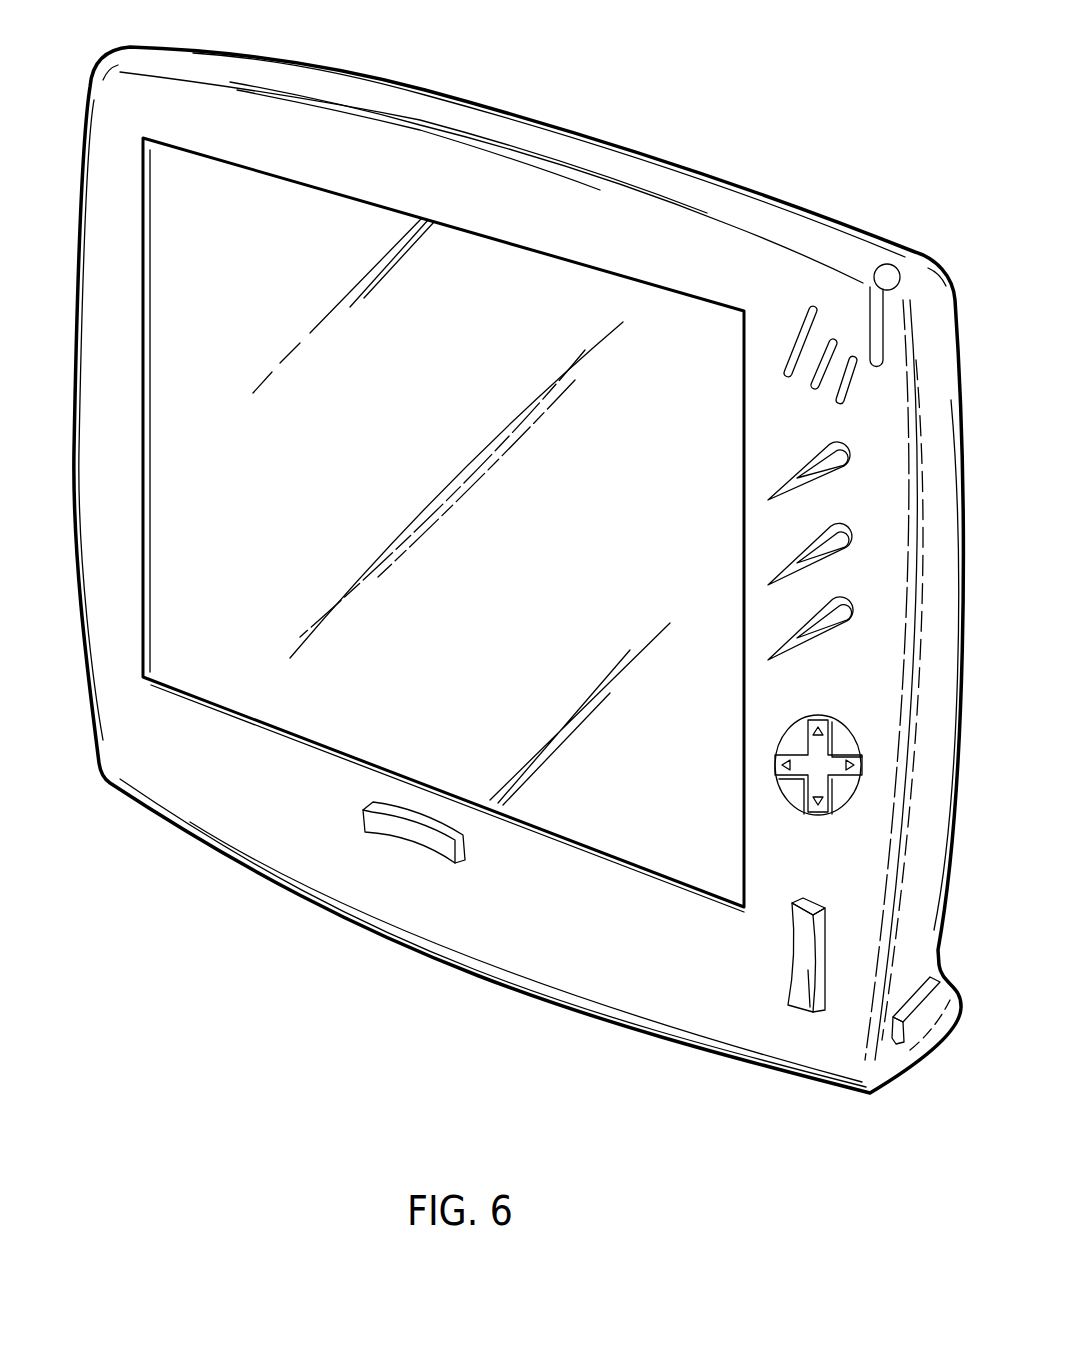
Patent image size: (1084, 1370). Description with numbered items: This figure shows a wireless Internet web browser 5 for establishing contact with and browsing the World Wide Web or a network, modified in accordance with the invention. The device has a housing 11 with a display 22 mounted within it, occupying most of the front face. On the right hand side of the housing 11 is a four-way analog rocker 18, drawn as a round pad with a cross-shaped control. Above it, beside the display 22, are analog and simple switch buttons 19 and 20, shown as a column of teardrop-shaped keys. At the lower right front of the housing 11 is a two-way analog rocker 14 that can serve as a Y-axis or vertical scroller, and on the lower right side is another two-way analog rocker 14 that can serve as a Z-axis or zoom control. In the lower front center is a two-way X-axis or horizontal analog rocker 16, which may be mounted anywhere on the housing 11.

The wireless Internet web browser 5 is at (765, 190).
The housing 11 is at (437, 115).
The display 22 is at (483, 283).
The analog and simple switch button 19 is at (840, 450).
The analog and simple switch buttons 20 is at (817, 553).
The 4-way analog rocker 18 is at (812, 763).
The 2-way X-axis analog rocker 16 is at (407, 830).
The 2-way analog rocker 14 is at (812, 1012).